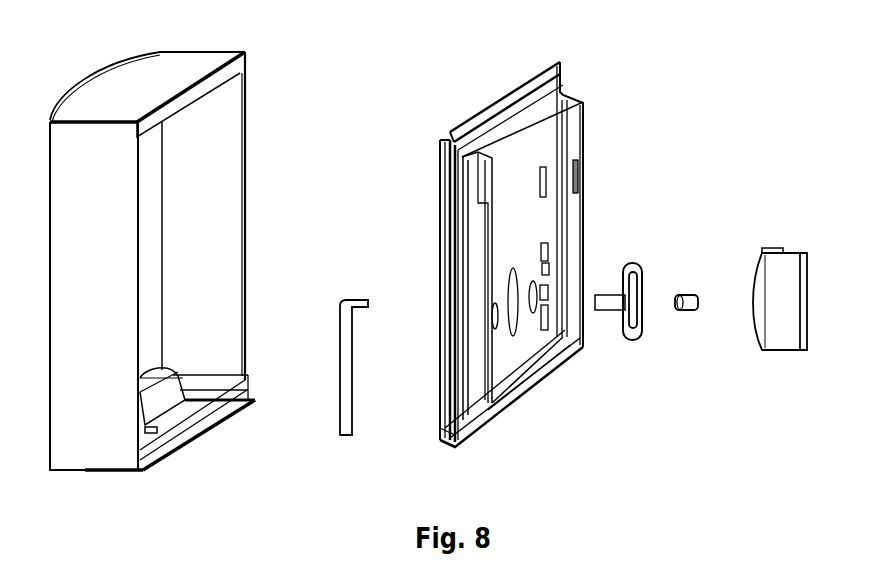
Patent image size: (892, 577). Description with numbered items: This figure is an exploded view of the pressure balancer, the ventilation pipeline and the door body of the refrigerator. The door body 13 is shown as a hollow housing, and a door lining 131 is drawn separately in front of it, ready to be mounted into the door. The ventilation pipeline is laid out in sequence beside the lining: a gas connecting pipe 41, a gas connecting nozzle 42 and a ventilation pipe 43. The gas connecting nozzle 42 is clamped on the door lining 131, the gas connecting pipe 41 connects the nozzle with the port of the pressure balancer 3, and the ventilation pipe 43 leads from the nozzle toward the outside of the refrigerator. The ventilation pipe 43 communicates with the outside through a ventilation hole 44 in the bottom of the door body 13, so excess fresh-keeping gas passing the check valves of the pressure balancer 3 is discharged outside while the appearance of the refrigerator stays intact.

The door body 13 is at (160, 50).
The door lining 131 is at (573, 100).
The pressure balancer 3 is at (805, 250).
The gas connecting pipe 41 is at (698, 297).
The gas connecting nozzle 42 is at (633, 263).
The ventilation pipe 43 is at (348, 295).
The ventilation hole 44 is at (148, 430).